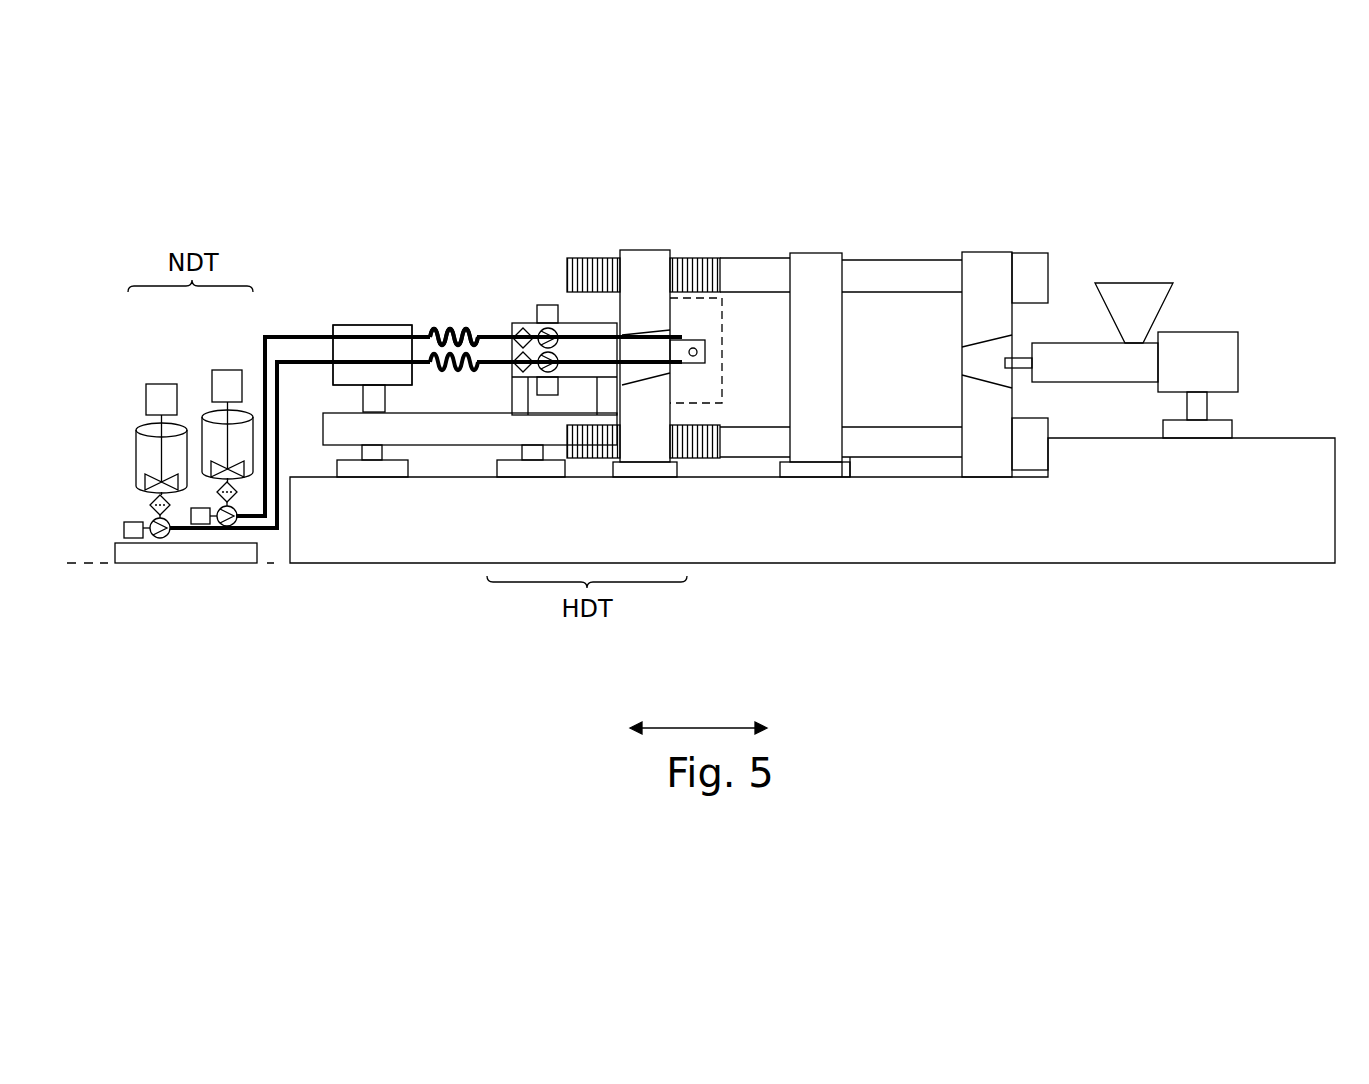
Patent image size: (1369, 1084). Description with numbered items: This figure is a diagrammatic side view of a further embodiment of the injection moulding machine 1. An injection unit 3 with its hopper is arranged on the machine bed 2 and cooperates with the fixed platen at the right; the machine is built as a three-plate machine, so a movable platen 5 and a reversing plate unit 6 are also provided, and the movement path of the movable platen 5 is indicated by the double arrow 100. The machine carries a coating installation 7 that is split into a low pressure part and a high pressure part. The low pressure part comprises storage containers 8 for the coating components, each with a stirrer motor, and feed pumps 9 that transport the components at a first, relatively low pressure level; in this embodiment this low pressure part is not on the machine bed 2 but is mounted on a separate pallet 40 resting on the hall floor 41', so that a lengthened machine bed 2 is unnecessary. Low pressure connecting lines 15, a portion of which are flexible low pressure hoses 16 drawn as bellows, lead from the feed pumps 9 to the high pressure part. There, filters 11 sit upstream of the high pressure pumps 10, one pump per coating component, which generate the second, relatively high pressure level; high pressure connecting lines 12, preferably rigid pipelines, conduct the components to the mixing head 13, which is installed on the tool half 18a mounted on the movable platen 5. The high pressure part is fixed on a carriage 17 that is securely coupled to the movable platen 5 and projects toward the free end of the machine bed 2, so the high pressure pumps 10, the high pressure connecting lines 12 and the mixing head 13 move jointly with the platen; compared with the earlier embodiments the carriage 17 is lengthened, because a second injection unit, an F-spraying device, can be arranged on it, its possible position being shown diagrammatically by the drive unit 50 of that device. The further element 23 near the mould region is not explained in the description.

The injection moulding machine 1 is at (864, 252).
The machine bed 2 is at (718, 547).
The injection unit 3 is at (1140, 265).
The movable platen 5 is at (633, 275).
The reversing plate unit 6 is at (815, 270).
The coating installation 7 is at (352, 262).
The storage containers 8 is at (140, 427).
The feed pumps 9 is at (157, 540).
The high pressure pumps 10 is at (540, 330).
The filters 11 is at (512, 338).
The high pressure connecting lines 12 is at (567, 328).
The mixing head 13 is at (700, 333).
The low pressure connecting lines 15 is at (290, 362).
The low pressure hoses 16 is at (430, 330).
The carriage 17 is at (487, 433).
The tool half 18a is at (715, 403).
The mold half 23 is at (633, 375).
The pallet 40 is at (133, 553).
The hall floor 41' is at (187, 602).
The drive unit 50 is at (349, 330).
The movement path 100 is at (708, 728).